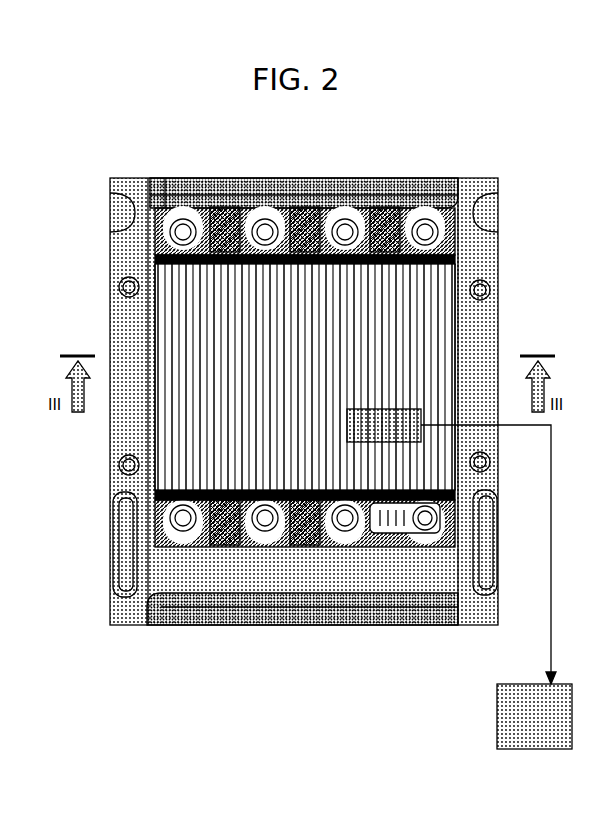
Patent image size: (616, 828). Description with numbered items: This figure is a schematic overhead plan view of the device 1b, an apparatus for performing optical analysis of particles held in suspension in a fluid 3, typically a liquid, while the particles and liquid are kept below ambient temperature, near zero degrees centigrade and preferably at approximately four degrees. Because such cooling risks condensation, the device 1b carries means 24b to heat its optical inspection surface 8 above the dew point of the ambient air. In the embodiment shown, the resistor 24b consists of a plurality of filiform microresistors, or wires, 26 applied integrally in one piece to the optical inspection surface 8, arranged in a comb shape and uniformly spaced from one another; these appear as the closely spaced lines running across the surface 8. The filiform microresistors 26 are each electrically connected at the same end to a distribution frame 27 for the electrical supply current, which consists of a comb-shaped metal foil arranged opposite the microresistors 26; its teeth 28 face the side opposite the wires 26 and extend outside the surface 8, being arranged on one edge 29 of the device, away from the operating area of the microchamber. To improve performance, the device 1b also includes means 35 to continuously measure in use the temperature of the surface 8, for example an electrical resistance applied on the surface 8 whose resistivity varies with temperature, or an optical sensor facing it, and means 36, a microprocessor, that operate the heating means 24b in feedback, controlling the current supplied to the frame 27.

The device 1b is at (126, 144).
The resistor 24b is at (394, 178).
The edge 29 is at (169, 178).
The distribution frame 27 is at (460, 242).
The teeth 28 is at (216, 196).
The optical inspection surface 8 is at (415, 320).
The fluid 3 is at (183, 430).
The filiform microresistors 26 is at (182, 300).
The temperature detection means 35 is at (345, 522).
The feedback control means 36 is at (497, 718).